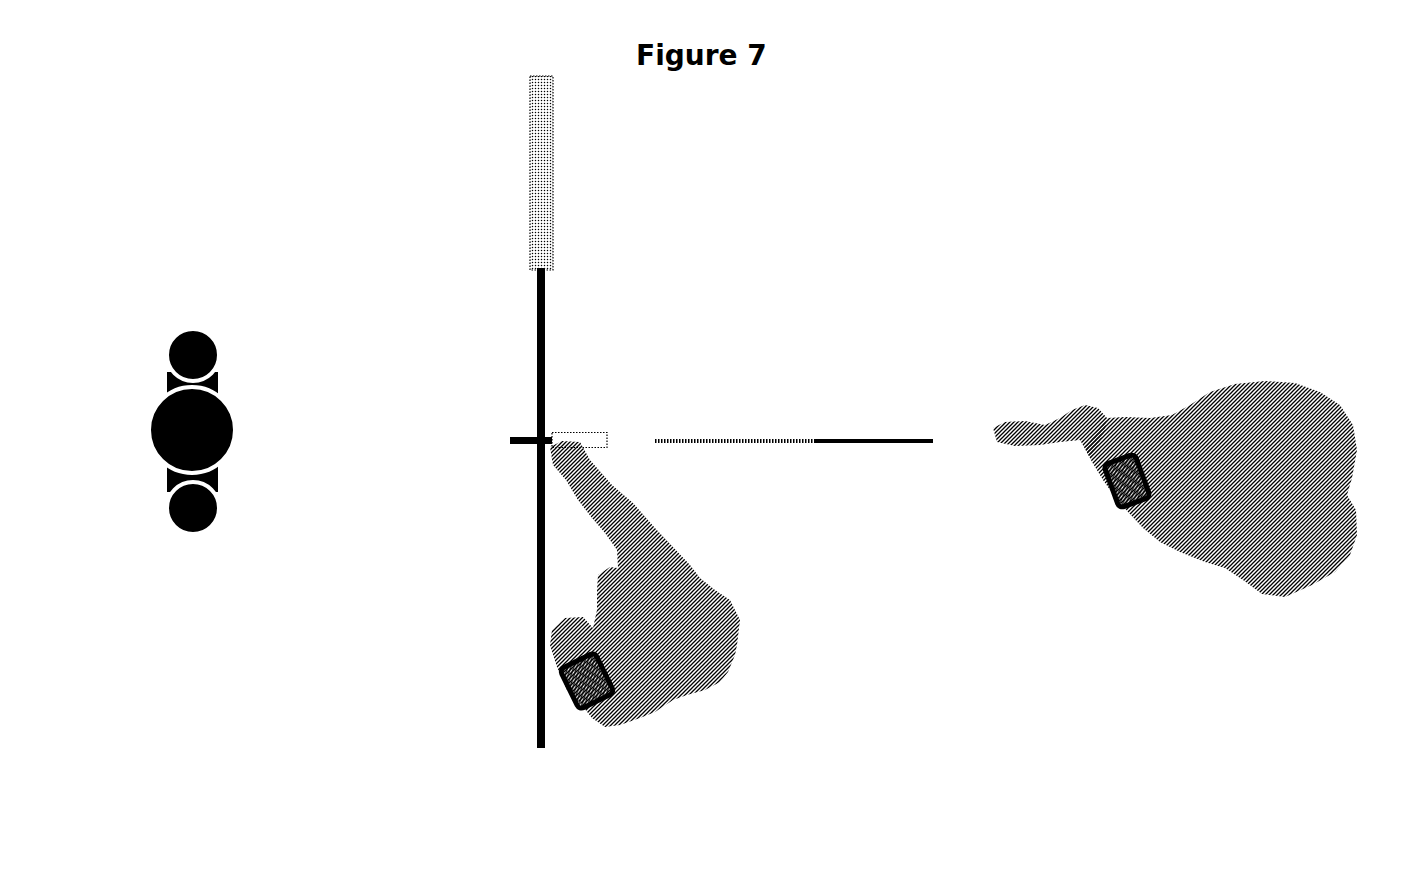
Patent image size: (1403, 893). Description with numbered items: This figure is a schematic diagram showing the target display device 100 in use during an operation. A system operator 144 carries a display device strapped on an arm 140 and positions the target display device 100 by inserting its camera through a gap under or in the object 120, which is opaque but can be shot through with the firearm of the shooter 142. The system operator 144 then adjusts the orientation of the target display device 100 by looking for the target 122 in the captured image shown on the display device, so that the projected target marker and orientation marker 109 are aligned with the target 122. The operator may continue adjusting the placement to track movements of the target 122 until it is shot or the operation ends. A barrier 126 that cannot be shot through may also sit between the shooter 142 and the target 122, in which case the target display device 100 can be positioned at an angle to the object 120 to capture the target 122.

The target display device 100 is at (586, 421).
The orientation marker 109 is at (828, 423).
The object 120 is at (560, 303).
The target 122 is at (242, 508).
The barrier 126 is at (553, 175).
The arm 140 is at (1125, 420).
The shooter 142 is at (1233, 387).
The system operator 144 is at (693, 562).